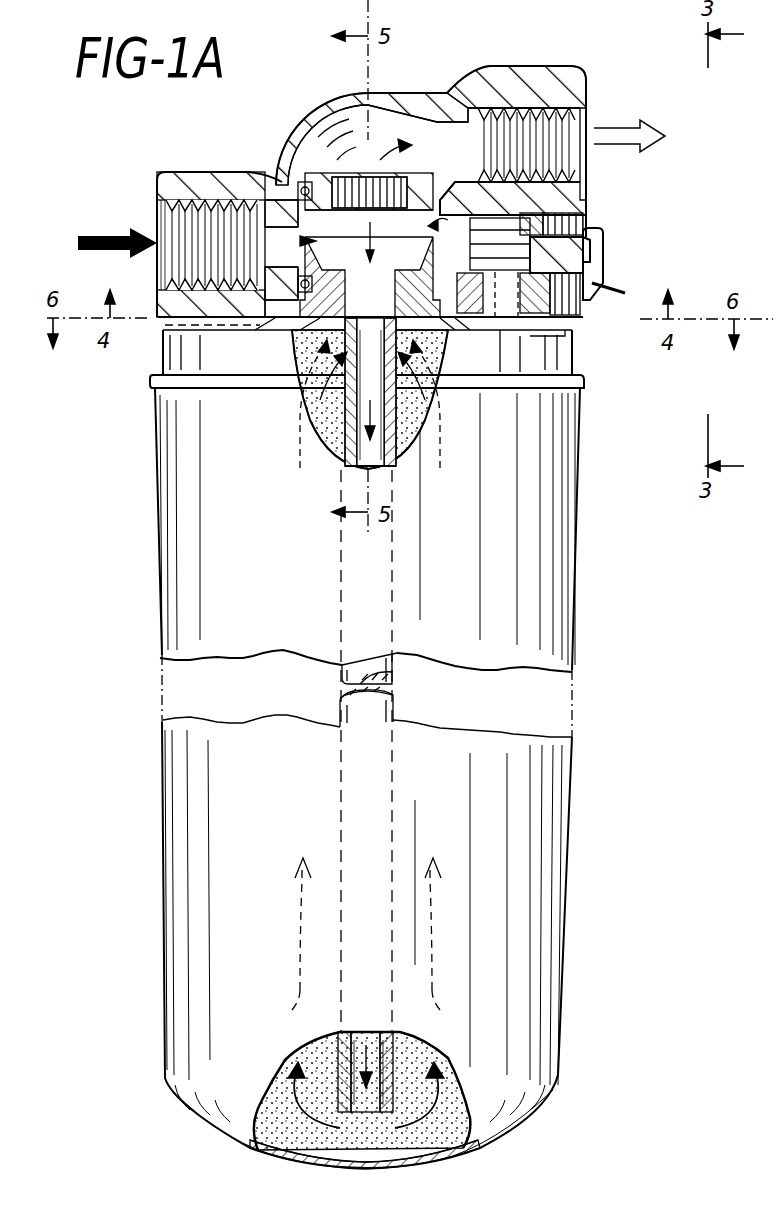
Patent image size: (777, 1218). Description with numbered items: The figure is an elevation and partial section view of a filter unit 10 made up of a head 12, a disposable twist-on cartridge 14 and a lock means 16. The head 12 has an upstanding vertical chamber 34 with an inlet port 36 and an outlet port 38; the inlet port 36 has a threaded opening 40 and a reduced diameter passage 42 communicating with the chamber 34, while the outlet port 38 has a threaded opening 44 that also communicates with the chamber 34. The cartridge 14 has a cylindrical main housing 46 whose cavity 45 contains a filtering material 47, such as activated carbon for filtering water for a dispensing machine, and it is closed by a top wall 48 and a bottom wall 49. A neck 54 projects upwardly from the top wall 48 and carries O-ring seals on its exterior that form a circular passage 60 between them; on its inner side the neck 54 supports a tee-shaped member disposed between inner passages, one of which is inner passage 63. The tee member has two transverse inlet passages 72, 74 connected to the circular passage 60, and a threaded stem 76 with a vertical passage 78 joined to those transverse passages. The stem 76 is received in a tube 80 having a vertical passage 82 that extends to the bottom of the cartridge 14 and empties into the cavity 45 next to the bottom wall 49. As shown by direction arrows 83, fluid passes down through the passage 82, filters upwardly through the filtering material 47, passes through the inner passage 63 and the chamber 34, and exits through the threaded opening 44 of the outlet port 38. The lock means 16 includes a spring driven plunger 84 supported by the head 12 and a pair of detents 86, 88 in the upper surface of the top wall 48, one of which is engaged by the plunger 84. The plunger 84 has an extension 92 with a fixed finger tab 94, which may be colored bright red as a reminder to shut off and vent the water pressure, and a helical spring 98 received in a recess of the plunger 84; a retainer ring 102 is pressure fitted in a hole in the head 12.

The filter unit 10 is at (105, 472).
The head 12 is at (547, 118).
The cartridge 14 is at (413, 771).
The lock means 16 is at (625, 242).
The vertical chamber 34 is at (348, 158).
The inlet port 36 is at (191, 226).
The outlet port 38 is at (590, 80).
The threaded opening 40 is at (195, 222).
The reduced diameter passage 42 is at (235, 246).
The threaded opening 44 is at (508, 128).
The cavity 45 is at (374, 1152).
The main housing 46 is at (555, 521).
The filtering material 47 is at (260, 1140).
The top wall 48 is at (235, 332).
The bottom wall 49 is at (458, 1152).
The neck 54 is at (416, 172).
The circular passage 60 is at (303, 182).
The inner passage 63 is at (435, 360).
The transverse inlet passage 72 is at (277, 182).
The transverse inlet passage 74 is at (455, 222).
The stem 76 is at (308, 338).
The vertical passage 78 is at (350, 458).
The tube 80 is at (400, 672).
The vertical passage 82 is at (362, 1040).
The direction arrows 83 is at (292, 1010).
The plunger 84 is at (508, 380).
The detent 86 is at (165, 332).
The detent 88 is at (568, 333).
The extension 92 is at (594, 228).
The finger tab 94 is at (627, 292).
The helical spring 98 is at (563, 227).
The retainer ring 102 is at (583, 310).